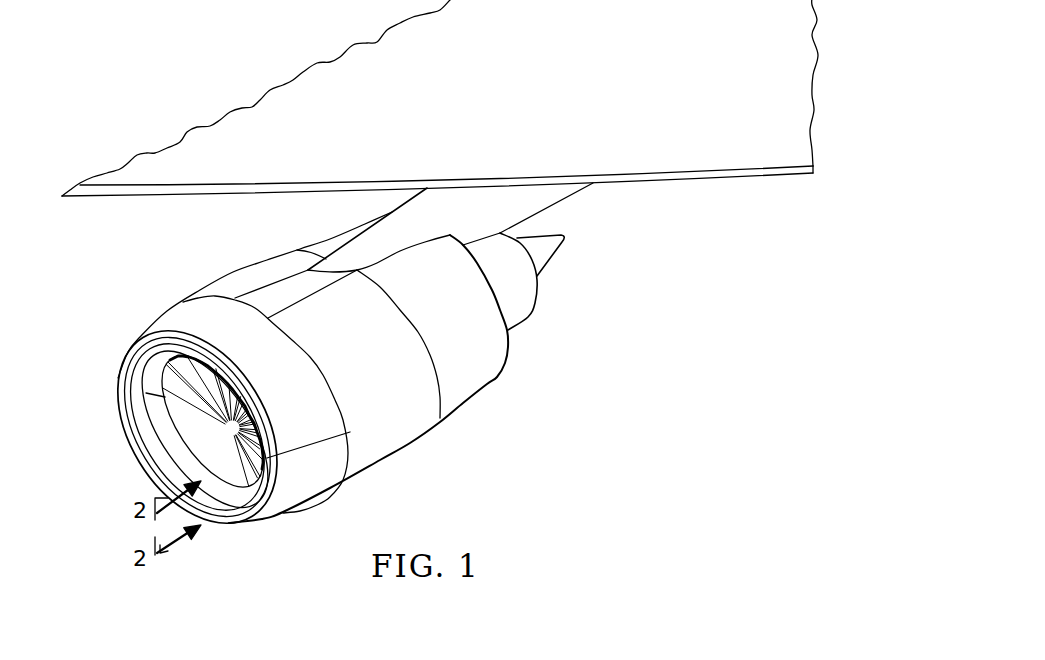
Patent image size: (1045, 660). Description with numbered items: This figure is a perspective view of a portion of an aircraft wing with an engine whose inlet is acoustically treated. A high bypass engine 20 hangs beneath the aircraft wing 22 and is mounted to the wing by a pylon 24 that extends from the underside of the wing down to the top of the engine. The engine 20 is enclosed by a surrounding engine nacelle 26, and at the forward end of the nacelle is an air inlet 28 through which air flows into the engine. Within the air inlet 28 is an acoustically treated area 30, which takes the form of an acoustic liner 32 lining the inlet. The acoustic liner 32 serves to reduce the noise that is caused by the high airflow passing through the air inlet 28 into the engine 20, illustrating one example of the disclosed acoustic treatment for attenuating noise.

The high bypass engine 20 is at (308, 399).
The aircraft wing 22 is at (304, 72).
The pylon 24 is at (541, 203).
The engine nacelle 26 is at (402, 433).
The air inlet 28 is at (140, 398).
The acoustically treated area 30 is at (150, 430).
The acoustic liner 32 is at (231, 502).